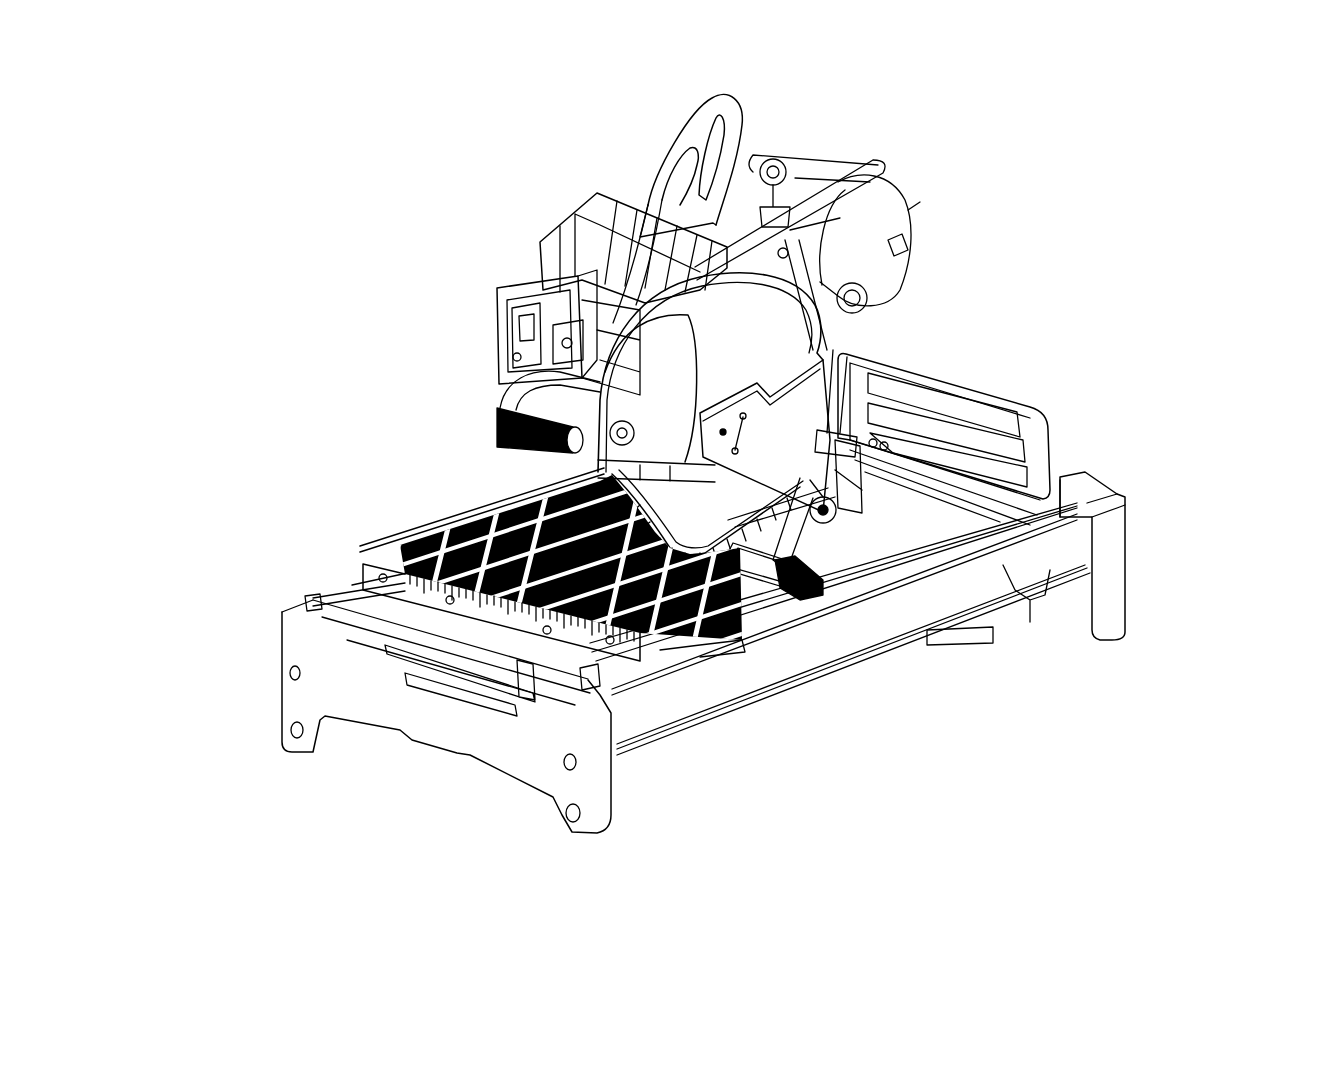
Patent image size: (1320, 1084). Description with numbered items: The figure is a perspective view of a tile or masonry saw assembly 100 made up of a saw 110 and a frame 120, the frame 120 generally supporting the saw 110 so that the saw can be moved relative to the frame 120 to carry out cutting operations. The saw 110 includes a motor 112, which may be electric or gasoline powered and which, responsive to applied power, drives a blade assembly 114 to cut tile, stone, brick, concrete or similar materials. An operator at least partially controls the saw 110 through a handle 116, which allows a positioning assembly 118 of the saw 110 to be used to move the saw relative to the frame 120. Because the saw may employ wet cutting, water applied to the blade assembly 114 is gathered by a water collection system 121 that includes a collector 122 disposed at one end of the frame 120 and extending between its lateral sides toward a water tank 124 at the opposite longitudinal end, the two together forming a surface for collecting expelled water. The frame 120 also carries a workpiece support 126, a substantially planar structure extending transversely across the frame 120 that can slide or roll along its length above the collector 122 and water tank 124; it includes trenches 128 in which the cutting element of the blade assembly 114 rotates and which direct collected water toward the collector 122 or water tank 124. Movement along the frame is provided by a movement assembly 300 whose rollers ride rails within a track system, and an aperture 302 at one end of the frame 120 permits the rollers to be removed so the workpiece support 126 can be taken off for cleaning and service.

The masonry saw assembly 100 is at (708, 503).
The saw 110 is at (668, 347).
The motor 112 is at (590, 294).
The blade assembly 114 is at (789, 387).
The handle 116 is at (511, 416).
The positioning assembly 118 is at (726, 208).
The frame 120 is at (708, 598).
The water collection system 121 is at (842, 629).
The collector 122 is at (959, 526).
The water tank 124 is at (446, 721).
The workpiece support 126 is at (520, 593).
The trenches 128 is at (729, 663).
The movement assembly 300 is at (658, 621).
The aperture 302 is at (443, 692).